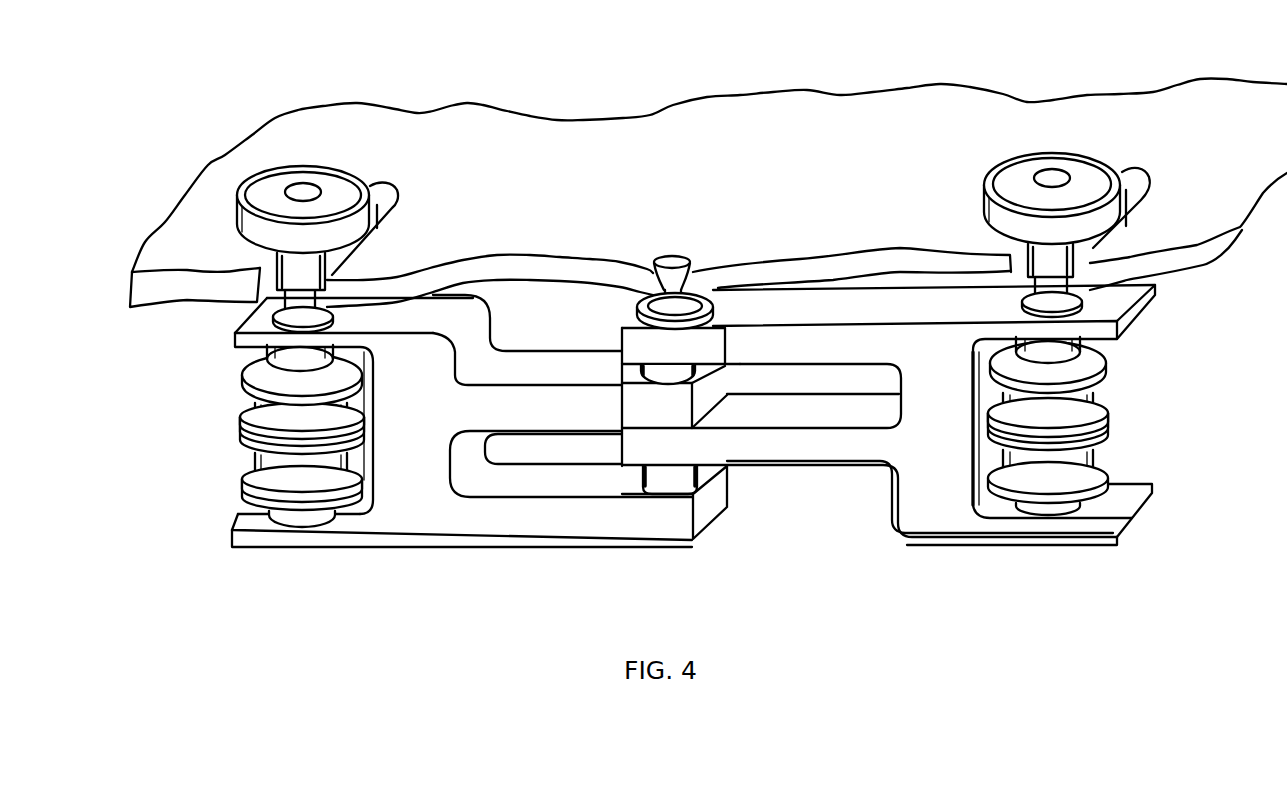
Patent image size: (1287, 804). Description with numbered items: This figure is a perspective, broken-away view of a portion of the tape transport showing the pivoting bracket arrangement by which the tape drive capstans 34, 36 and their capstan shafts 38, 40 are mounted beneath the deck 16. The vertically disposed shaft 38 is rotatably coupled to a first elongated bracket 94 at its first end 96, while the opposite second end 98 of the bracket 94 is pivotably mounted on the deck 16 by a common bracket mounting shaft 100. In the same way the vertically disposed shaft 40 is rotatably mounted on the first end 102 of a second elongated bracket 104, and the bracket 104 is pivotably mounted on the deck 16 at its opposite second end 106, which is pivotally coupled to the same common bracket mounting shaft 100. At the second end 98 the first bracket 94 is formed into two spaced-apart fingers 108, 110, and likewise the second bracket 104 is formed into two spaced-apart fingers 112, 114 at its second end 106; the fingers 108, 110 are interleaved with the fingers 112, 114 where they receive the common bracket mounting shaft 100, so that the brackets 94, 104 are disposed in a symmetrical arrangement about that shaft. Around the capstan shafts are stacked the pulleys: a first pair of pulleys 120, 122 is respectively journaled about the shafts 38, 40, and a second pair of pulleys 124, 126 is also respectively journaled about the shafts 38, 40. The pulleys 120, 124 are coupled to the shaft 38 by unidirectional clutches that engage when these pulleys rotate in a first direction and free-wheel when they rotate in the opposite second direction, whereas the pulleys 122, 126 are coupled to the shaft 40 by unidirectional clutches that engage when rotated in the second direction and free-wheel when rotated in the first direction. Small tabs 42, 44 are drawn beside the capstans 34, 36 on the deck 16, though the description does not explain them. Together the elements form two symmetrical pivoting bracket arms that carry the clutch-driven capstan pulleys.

The deck 16 is at (606, 129).
The capstan 34 is at (340, 183).
The capstan 36 is at (1095, 171).
The capstan shaft 38 is at (305, 195).
The capstan shaft 40 is at (1056, 178).
The support tab 42 is at (385, 195).
The support tab 44 is at (1134, 173).
The first elongated bracket 94 is at (478, 522).
The first end 96 is at (265, 531).
The second end 98 is at (717, 500).
The common bracket mounting shaft 100 is at (667, 477).
The first end 102 is at (1135, 510).
The second elongated bracket 104 is at (930, 516).
The second end 106 is at (667, 477).
The finger 108 is at (538, 366).
The finger 110 is at (547, 522).
The finger 112 is at (797, 347).
The finger 114 is at (796, 451).
The pulley 120 is at (265, 405).
The pulley 122 is at (1080, 397).
The pulley 124 is at (262, 465).
The pulley 126 is at (1080, 465).